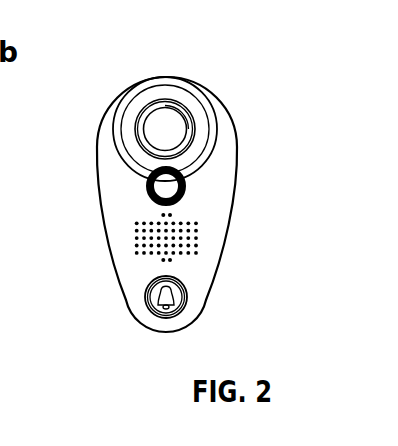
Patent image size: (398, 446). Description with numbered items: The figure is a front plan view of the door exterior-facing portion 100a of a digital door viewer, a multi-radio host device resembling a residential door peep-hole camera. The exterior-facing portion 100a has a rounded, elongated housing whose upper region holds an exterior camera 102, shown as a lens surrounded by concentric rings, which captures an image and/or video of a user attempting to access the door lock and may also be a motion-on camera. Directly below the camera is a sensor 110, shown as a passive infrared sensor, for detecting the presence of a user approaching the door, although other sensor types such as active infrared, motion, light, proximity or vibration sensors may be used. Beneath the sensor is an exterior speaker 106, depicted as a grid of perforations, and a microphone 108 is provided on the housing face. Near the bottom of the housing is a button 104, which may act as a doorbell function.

The door exterior-facing portion 100a is at (315, 63).
The exterior camera 102 is at (163, 128).
The button 104 is at (181, 297).
The exterior speaker 106 is at (200, 238).
The microphone 108 is at (125, 180).
The sensor 110 is at (152, 201).